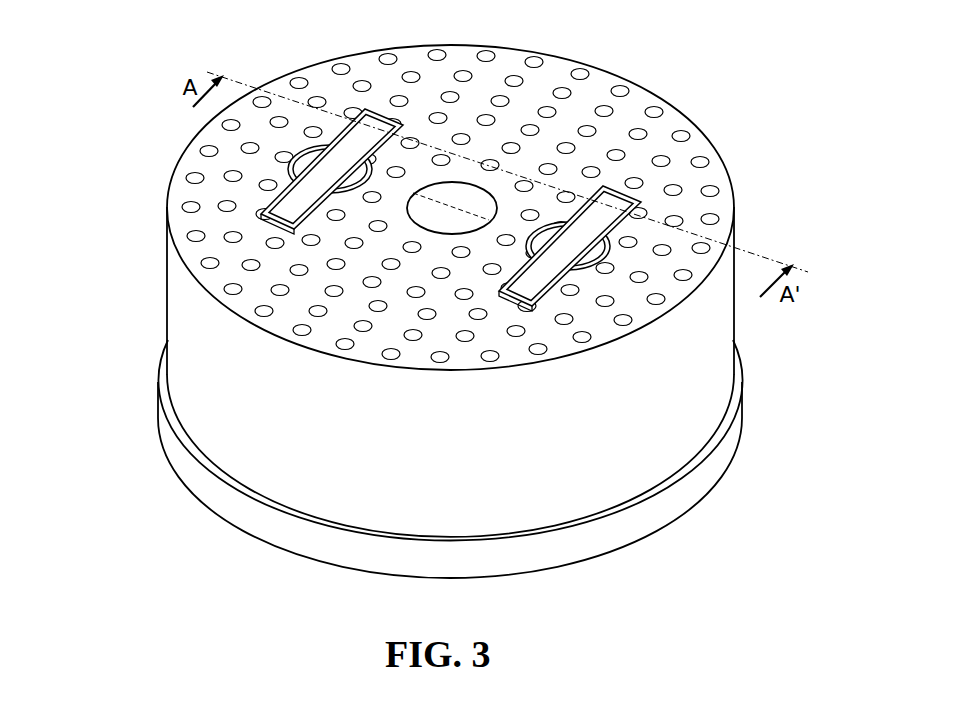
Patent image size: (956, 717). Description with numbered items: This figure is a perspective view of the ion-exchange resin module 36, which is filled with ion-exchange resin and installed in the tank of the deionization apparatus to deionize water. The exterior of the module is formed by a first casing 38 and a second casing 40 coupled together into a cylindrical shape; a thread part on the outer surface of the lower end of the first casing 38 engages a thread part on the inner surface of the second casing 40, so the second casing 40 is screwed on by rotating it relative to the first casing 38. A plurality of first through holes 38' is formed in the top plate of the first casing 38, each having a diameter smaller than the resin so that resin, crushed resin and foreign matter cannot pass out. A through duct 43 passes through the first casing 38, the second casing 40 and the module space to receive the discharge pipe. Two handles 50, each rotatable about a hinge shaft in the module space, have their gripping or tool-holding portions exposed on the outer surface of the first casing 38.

The ion-exchange resin module 36 is at (402, 293).
The first casing 38 is at (404, 291).
The first through holes 38' is at (450, 186).
The second casing 40 is at (182, 452).
The through duct 43 is at (463, 182).
The handle 50 is at (368, 103).